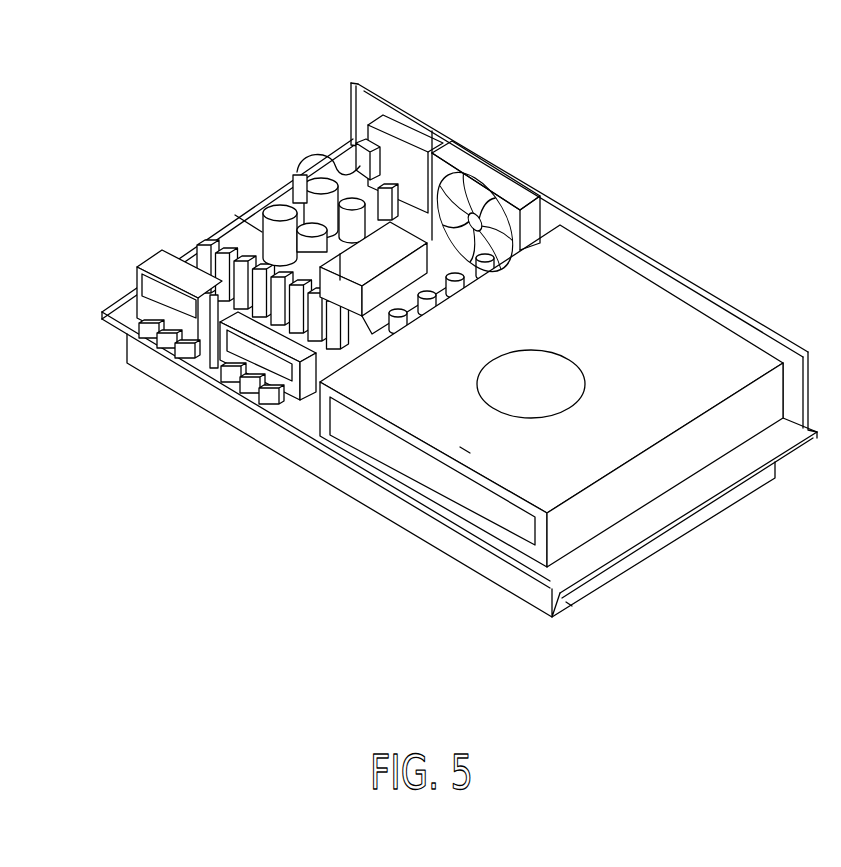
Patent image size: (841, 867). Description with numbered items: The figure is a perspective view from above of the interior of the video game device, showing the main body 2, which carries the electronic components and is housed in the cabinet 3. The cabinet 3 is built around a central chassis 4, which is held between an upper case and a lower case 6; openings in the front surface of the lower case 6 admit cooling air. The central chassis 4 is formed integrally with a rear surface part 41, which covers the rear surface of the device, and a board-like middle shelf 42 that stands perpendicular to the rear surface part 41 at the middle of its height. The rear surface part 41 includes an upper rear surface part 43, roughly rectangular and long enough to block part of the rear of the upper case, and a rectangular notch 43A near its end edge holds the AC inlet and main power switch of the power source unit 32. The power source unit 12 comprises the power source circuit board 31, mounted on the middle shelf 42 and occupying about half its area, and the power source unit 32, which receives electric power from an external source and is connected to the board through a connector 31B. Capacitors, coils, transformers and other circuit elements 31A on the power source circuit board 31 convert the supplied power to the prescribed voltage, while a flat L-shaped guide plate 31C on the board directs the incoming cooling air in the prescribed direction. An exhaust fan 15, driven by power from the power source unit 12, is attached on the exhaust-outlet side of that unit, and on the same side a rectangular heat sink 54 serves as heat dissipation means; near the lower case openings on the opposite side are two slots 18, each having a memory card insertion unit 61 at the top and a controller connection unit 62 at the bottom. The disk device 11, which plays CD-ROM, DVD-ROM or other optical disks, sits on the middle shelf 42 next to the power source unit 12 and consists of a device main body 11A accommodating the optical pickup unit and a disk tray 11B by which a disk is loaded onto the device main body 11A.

The main body 2 is at (232, 140).
The cabinet 3 is at (678, 533).
The central chassis 4 is at (597, 341).
The lower case 6 is at (570, 607).
The disk device 11 is at (551, 433).
The device main body 11A is at (500, 468).
The disk tray 11B is at (418, 468).
The power source unit 12 is at (280, 174).
The exhaust fan 15 is at (518, 197).
The slot 18 is at (214, 384).
The power source circuit board 31 is at (243, 226).
The circuit element 31A is at (252, 222).
The connector 31B is at (297, 167).
The guide plate 31C is at (528, 263).
The power source unit 32 is at (375, 127).
The rear surface part 41 is at (794, 356).
The middle shelf 42 is at (797, 444).
The upper rear surface part 43 is at (583, 220).
The notch 43A is at (436, 138).
The rectangular heat sink 54 is at (207, 243).
The memory card insertion unit 61 is at (200, 358).
The controller connection unit 62 is at (142, 346).